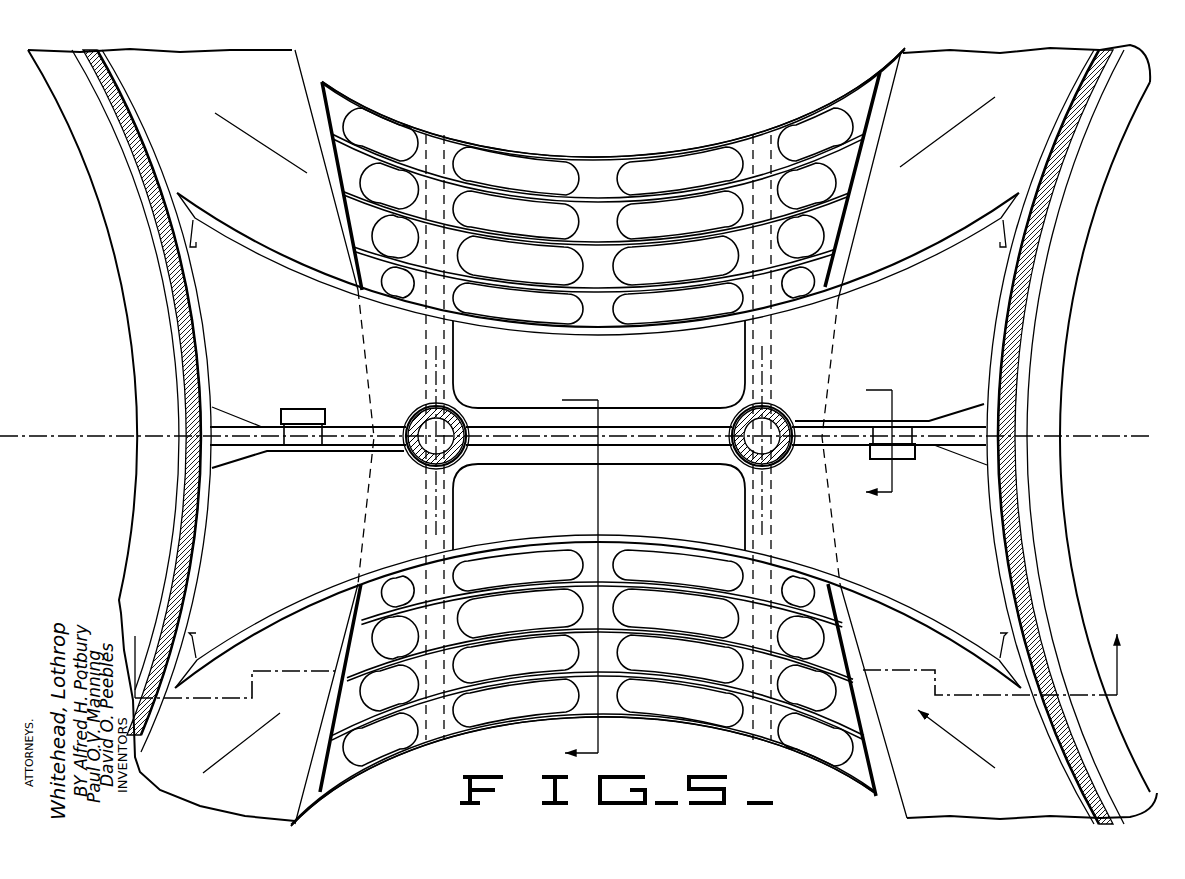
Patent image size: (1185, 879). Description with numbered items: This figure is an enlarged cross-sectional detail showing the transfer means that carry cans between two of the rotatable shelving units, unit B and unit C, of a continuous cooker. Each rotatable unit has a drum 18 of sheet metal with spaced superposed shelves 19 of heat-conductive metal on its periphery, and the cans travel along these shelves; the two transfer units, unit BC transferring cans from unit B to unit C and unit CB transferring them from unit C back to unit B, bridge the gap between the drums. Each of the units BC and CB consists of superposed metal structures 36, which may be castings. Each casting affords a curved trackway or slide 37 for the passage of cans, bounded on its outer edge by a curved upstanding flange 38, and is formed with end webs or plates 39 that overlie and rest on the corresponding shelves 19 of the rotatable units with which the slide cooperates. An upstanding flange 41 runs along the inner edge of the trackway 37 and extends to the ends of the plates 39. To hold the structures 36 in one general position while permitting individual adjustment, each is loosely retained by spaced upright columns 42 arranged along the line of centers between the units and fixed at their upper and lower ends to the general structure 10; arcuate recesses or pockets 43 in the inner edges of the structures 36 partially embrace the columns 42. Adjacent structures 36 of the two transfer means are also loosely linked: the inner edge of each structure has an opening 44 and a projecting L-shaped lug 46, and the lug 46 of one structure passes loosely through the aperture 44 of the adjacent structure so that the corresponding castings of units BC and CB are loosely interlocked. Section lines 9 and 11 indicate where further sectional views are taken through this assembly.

The drum 18 is at (146, 157).
The shelves 19 is at (298, 80).
The metal structures 36 is at (618, 148).
The curved trackway or slide 37 is at (446, 152).
The curved upstanding flange 38 is at (527, 152).
The end webs or plates 39 is at (301, 282).
The upstanding flange 41 is at (613, 333).
The upright columns 42 is at (455, 418).
The arcuate recesses or pockets 43 is at (418, 412).
The opening 44 is at (287, 412).
The L-shaped lug 46 is at (312, 417).
The section line 9- 9 is at (626, 653).
The structure 10 is at (597, 575).
The section line 11- 11 is at (894, 443).
The unit B is at (133, 433).
The unit C is at (1067, 411).
The transfer unit BC is at (709, 132).
The transfer unit CB is at (710, 733).